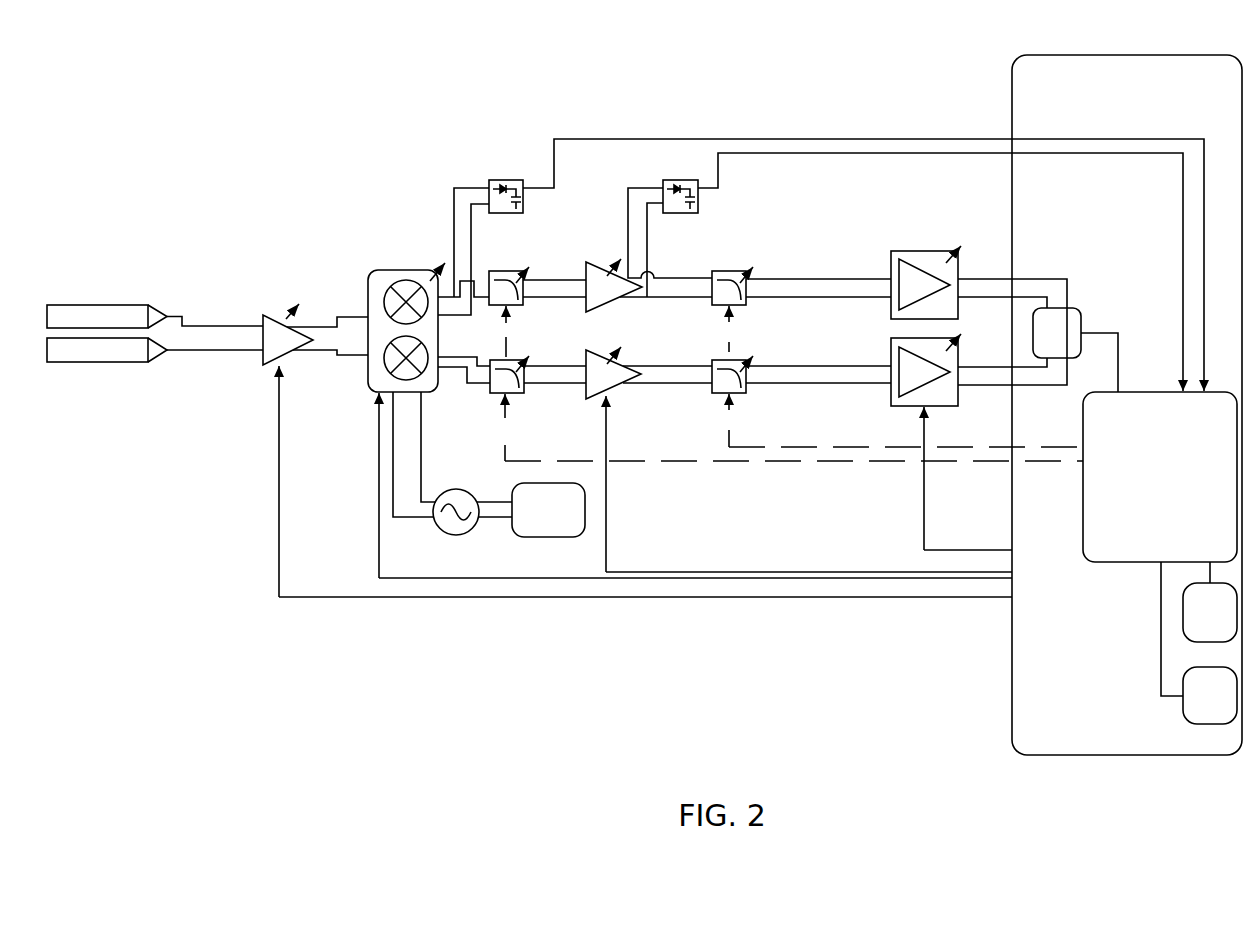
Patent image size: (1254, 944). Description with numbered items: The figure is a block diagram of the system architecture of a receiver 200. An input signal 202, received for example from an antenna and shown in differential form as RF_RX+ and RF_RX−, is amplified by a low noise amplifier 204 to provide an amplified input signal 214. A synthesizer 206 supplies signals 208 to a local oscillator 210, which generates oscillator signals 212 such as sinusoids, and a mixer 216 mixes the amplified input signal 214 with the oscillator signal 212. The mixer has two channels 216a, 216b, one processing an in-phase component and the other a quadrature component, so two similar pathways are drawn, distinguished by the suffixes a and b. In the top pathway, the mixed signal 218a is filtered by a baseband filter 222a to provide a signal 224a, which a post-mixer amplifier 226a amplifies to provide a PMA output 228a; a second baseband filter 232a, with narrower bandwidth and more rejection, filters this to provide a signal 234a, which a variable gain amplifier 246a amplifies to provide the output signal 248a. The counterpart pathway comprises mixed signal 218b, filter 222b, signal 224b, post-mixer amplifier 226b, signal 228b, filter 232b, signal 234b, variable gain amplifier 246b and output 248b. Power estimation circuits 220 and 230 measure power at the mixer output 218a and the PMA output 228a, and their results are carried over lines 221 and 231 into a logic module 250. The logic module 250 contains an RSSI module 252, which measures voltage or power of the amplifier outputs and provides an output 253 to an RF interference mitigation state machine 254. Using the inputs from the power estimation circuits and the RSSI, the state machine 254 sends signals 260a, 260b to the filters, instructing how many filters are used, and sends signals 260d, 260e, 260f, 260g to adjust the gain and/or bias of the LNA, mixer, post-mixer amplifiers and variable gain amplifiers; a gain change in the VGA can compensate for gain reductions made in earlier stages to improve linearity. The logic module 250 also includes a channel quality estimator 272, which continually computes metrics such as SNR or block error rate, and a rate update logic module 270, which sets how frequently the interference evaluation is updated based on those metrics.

The receiver 200 is at (203, 113).
The input signal 202 is at (215, 318).
The low noise amplifier (LNA) 204 is at (275, 312).
The synthesizer 206 is at (522, 537).
The signals from synthesizer 208 is at (490, 501).
The local oscillator 210 is at (447, 491).
The oscillator signal 212 is at (422, 430).
The amplified input signal 214 is at (317, 318).
The mixer 216 is at (381, 398).
The mixer channel 216a is at (400, 270).
The mixer channel 216b is at (372, 384).
The mixed signal 218a is at (455, 186).
The second mixer output signal 218b is at (456, 370).
The power estimation circuit (Pdet1) 220 is at (505, 180).
The first power detector output 221 is at (572, 139).
The filter 222a is at (525, 304).
The filter 222b is at (526, 393).
The filtered signal 224a is at (556, 282).
The second filter output signal 224b is at (550, 367).
The post-mixer amplifier (PMA) 226a is at (596, 262).
The post-mixer amplifier (PMA) 226b is at (588, 400).
The PMA output 228a is at (640, 184).
The second PMA output signal 228b is at (644, 384).
The power estimation circuit (Pdet2) 230 is at (676, 180).
The second power detector output 231 is at (736, 153).
The filter 232a is at (748, 306).
The filter 232b is at (746, 393).
The filtered signal 234a is at (805, 279).
The fourth filter output signal 234b is at (790, 384).
The variable gain amplifier (VGA) 246a is at (912, 251).
The variable gain amplifier (VGA) 246b is at (956, 406).
The amplified output signal 248a is at (978, 279).
The second VGA output signal 248b is at (976, 367).
The logic module 250 is at (1075, 55).
The received signal strength indication (RSSI) module 252 is at (1057, 333).
The RSSI output 253 is at (1100, 333).
The RF interference mitigation state machine 254 is at (1160, 477).
The feedback signal 260a is at (853, 462).
The feedback signal 260b is at (897, 462).
The control signal 260d is at (763, 597).
The control signal 260e is at (857, 578).
The control signal 260f is at (895, 572).
The control signal 260g is at (953, 550).
The rate update logic module 270 is at (1199, 643).
The channel quality estimator 272 is at (1210, 602).